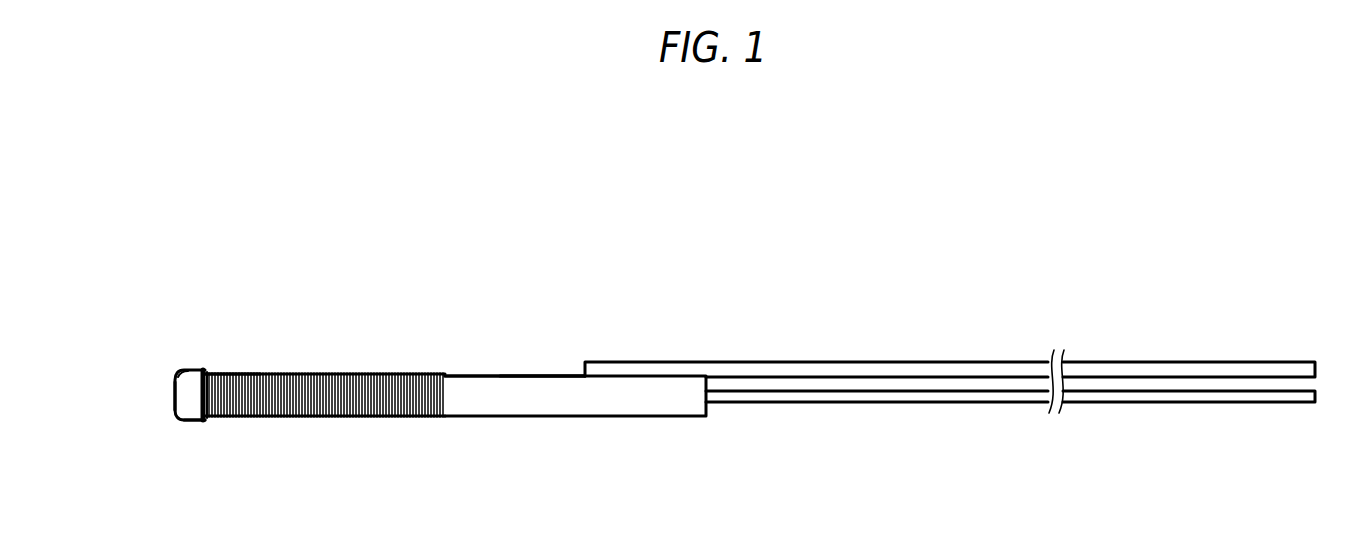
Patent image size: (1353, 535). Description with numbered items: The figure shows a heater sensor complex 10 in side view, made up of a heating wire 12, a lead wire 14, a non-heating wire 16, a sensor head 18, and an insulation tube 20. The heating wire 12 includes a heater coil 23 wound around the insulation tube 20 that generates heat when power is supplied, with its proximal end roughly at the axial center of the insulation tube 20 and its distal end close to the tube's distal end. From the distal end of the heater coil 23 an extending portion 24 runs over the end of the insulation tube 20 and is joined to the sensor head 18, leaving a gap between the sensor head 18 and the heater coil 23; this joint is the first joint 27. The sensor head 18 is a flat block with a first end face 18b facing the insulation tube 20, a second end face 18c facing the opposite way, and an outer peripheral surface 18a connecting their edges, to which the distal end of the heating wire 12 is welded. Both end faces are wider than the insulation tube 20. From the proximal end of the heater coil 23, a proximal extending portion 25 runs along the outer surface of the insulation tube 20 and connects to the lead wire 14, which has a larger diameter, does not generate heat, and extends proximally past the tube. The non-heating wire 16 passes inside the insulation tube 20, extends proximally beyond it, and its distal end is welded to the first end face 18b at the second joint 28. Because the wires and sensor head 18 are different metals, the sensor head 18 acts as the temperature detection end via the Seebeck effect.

The heater sensor complex 10 is at (712, 286).
The heating wire 12 is at (469, 373).
The lead wire 14 is at (1157, 359).
The non-heating wire 16 is at (929, 404).
The sensor head 18 is at (171, 417).
The outer peripheral surface 18a is at (196, 422).
The first end face 18b is at (234, 374).
The second end face 18c is at (172, 404).
The insulation tube 20 is at (529, 419).
The heater coil 23 is at (304, 371).
The extending portion 24 is at (193, 368).
The proximal extending portion 25 is at (537, 372).
The first joint 27 is at (178, 380).
The second joint 28 is at (228, 420).